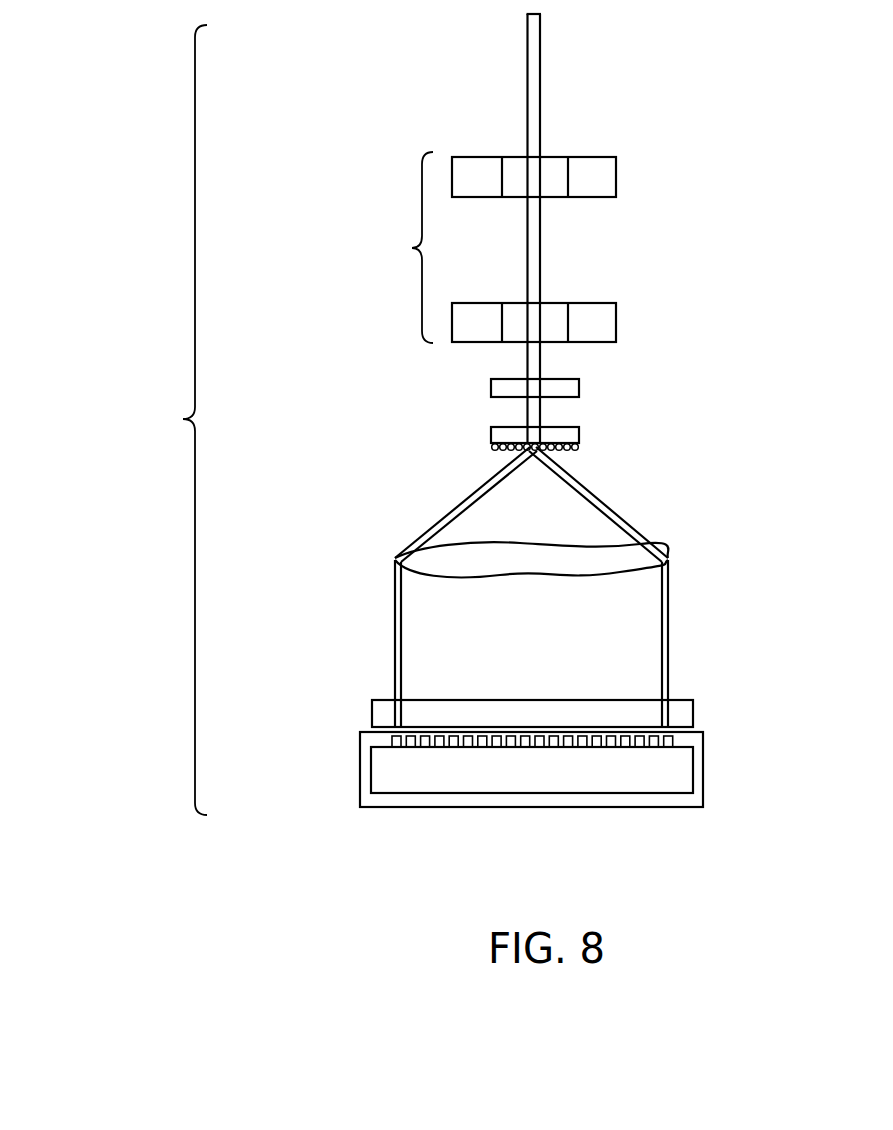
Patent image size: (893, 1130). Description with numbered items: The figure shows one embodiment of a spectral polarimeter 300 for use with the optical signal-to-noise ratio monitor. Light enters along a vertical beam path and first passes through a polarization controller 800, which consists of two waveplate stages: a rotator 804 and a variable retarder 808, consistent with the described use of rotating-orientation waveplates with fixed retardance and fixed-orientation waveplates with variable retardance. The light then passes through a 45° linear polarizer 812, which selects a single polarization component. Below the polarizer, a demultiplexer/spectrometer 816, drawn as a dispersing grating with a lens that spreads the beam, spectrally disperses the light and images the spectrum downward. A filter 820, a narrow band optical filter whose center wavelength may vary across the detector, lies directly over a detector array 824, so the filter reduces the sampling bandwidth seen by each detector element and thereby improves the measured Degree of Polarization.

The spectral polarimeter 300 is at (109, 420).
The polarization controller 800 is at (332, 247).
The rotator 804 is at (604, 174).
The variable retarder 808 is at (611, 330).
The 45° linear polarizer 812 is at (590, 395).
The demultiplexer/spectrometer 816 is at (435, 577).
The filter 820 is at (592, 735).
The detector array 824 is at (460, 753).